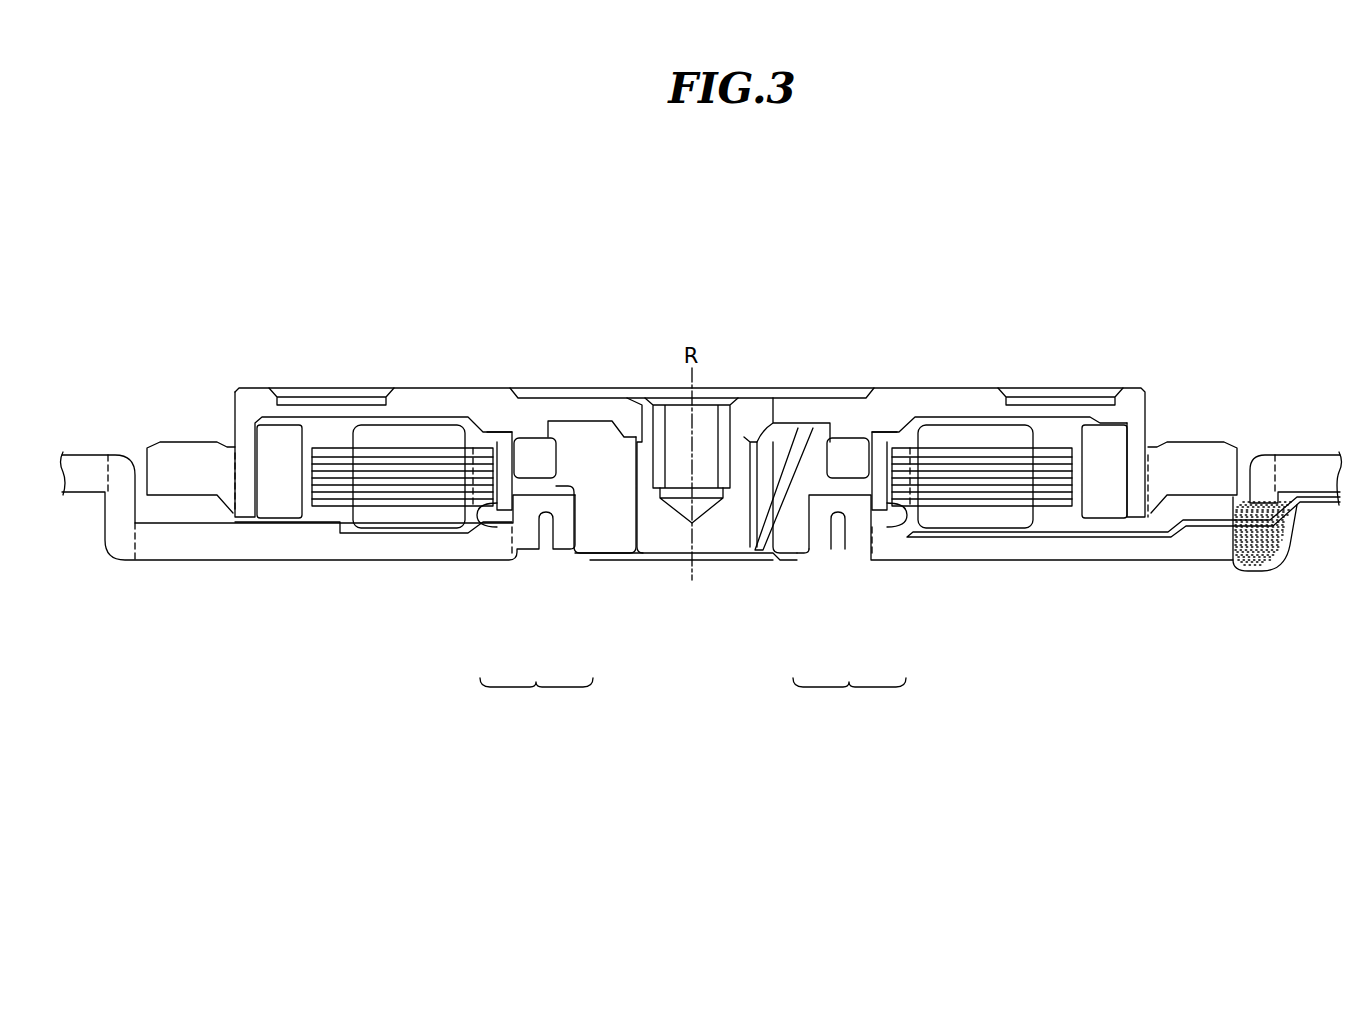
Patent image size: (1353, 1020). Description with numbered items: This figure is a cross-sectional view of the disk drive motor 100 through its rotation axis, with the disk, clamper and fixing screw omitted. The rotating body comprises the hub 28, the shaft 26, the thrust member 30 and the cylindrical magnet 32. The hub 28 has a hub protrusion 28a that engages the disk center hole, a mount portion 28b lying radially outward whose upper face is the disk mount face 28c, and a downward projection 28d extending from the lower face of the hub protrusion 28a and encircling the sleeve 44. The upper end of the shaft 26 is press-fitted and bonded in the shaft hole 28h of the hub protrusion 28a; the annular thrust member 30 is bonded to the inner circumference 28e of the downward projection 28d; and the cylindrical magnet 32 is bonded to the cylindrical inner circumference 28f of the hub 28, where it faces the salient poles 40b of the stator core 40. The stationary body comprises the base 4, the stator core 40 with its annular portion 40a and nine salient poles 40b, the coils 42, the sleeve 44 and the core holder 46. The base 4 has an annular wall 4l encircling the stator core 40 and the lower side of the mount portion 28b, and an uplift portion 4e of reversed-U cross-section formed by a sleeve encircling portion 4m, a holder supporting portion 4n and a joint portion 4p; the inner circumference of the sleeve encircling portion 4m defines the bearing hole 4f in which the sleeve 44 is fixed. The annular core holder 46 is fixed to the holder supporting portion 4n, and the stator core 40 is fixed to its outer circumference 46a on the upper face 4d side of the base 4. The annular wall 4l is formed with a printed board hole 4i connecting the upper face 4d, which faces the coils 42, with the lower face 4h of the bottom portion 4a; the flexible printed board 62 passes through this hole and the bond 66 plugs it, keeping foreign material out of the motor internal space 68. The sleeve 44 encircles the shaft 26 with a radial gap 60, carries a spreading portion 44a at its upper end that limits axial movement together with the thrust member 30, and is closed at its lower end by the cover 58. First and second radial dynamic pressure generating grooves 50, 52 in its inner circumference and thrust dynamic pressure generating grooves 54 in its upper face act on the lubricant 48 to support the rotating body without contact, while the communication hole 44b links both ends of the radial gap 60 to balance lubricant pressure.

The base 4 is at (1138, 550).
The bottom portion 4a is at (87, 467).
The upper face 4d is at (373, 523).
The uplift portion 4e is at (693, 698).
The bearing hole 4f is at (803, 562).
The lower face 4h is at (80, 495).
The printed board hole 4i is at (1240, 556).
The annular wall 4l is at (1263, 477).
The sleeve encircling portion 4m is at (560, 556).
The holder supporting portion 4n is at (517, 556).
The joint portion 4p is at (541, 545).
The shaft 26 is at (655, 560).
The hub 28 is at (592, 398).
The hub protrusion 28a is at (445, 396).
The mount portion 28b is at (172, 455).
The disk mount face 28c is at (210, 442).
The downward projection 28d is at (510, 440).
The inner circumference 28e is at (528, 388).
The cylindrical inner circumference 28f is at (240, 440).
The shaft hole 28h is at (732, 398).
The thrust member 30 is at (560, 440).
The cylindrical magnet 32 is at (285, 440).
The stator core 40 is at (402, 462).
The annular portion 40a is at (482, 460).
The salient poles 40b is at (337, 462).
The coils 42 is at (403, 517).
The sleeve 44 is at (597, 543).
The spreading portion 44a is at (552, 425).
The communication hole 44b is at (716, 556).
The core holder 46 is at (495, 530).
The outer circumference 46a is at (493, 482).
The lubricant 48 is at (742, 407).
The first radial dynamic pressure generating grooves 50 is at (633, 405).
The second radial dynamic pressure generating grooves 52 is at (640, 558).
The thrust dynamic pressure generating grooves 54 is at (600, 388).
The cover 58 is at (676, 556).
The radial gap 60 is at (790, 440).
The flexible printed board 62 is at (1190, 533).
The bond 66 is at (1282, 532).
The motor internal space 68 is at (318, 515).
The motor 100 is at (718, 783).